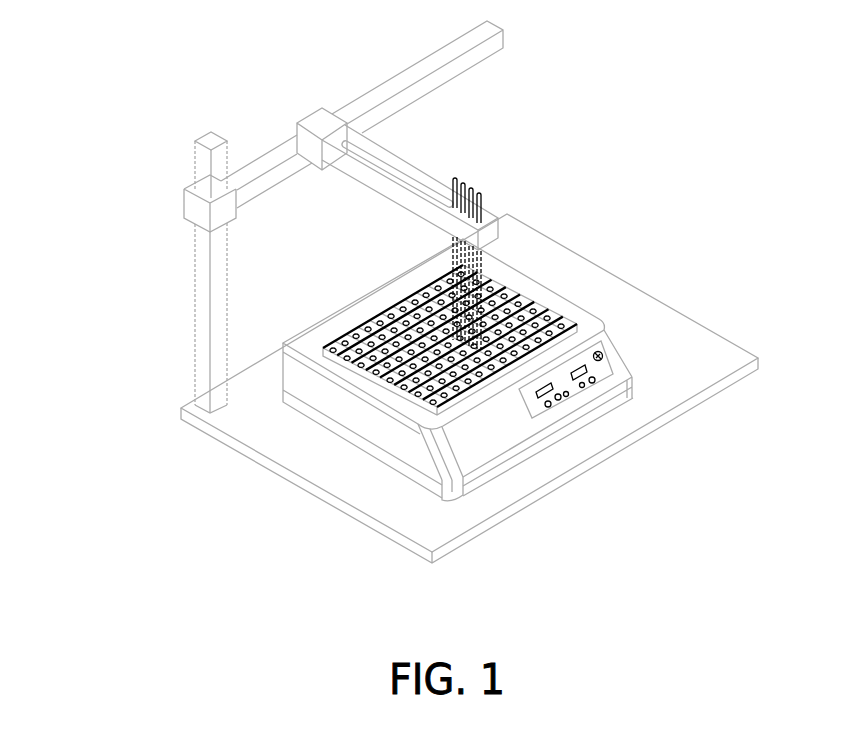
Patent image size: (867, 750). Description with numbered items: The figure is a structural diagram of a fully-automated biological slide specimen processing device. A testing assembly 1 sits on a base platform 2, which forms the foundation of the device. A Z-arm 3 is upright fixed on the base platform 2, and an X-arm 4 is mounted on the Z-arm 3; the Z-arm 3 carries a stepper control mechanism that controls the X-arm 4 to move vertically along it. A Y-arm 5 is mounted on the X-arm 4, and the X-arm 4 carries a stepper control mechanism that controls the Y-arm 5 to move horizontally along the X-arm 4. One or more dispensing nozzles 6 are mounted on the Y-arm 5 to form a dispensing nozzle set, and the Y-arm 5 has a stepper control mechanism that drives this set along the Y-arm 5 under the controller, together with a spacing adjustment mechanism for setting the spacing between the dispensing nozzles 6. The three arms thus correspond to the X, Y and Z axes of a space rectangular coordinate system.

The testing assembly 1 is at (420, 448).
The base platform 2 is at (270, 437).
The Z-arm 3 is at (203, 311).
The X-arm 4 is at (275, 155).
The Y-arm 5 is at (368, 145).
The dispensing nozzle 6 is at (455, 180).